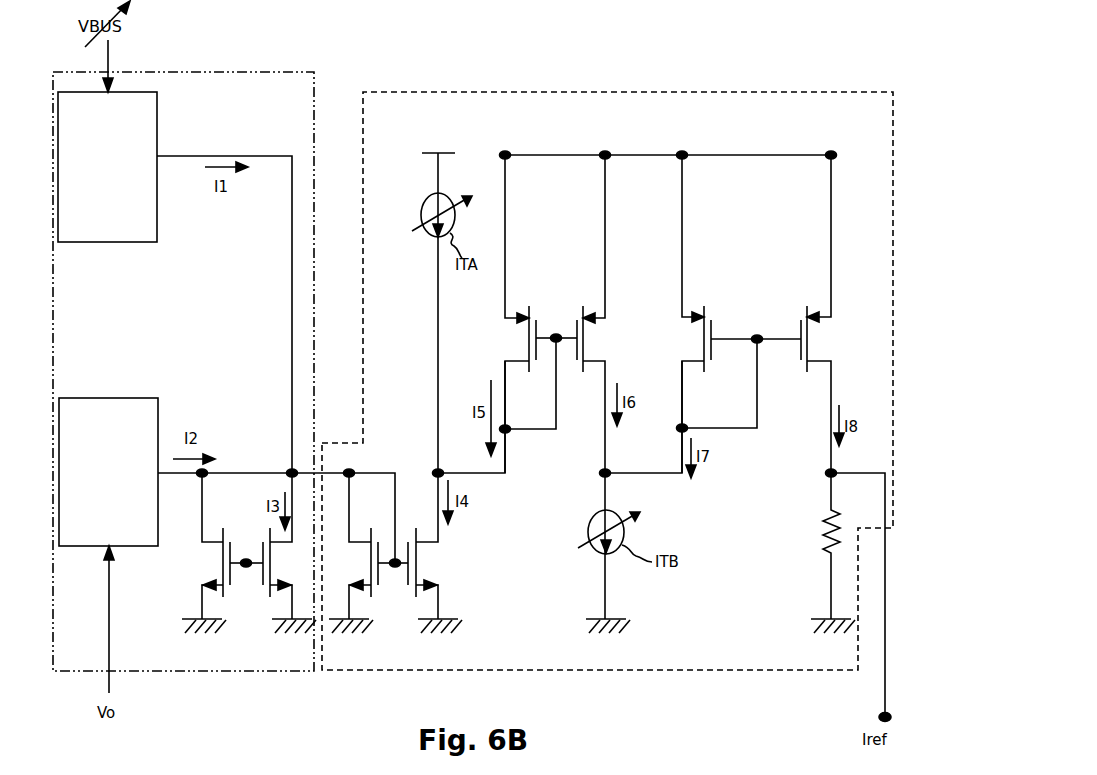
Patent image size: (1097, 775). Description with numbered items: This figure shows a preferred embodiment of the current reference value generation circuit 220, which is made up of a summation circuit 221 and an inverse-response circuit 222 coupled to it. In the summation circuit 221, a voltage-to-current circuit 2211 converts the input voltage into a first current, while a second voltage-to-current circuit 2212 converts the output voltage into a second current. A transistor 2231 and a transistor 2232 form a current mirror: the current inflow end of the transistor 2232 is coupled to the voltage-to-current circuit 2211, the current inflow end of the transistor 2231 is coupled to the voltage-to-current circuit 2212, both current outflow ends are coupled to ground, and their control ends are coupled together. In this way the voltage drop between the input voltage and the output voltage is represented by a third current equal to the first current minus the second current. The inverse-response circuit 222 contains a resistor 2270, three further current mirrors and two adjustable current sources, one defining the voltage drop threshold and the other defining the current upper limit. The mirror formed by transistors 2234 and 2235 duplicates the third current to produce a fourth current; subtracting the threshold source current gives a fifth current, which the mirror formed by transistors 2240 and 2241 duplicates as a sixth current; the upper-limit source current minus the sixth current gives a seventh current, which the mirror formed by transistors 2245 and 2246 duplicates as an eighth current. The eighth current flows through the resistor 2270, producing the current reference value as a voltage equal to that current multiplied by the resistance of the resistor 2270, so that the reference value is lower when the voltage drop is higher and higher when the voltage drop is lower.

The current reference value generation circuit 220 is at (790, 68).
The summation circuit 221 is at (152, 68).
The inverse-response circuit 222 is at (432, 90).
The voltage-to-current circuit 2211 is at (107, 167).
The voltage-to-current circuit 2212 is at (108, 472).
The transistor 2231 is at (211, 580).
The transistor 2232 is at (281, 553).
The transistor 2234 is at (360, 580).
The transistor 2235 is at (430, 553).
The transistor 2240 is at (519, 314).
The transistor 2241 is at (592, 314).
The transistor 2245 is at (703, 314).
The transistor 2246 is at (809, 314).
The resistor 2270 is at (811, 553).